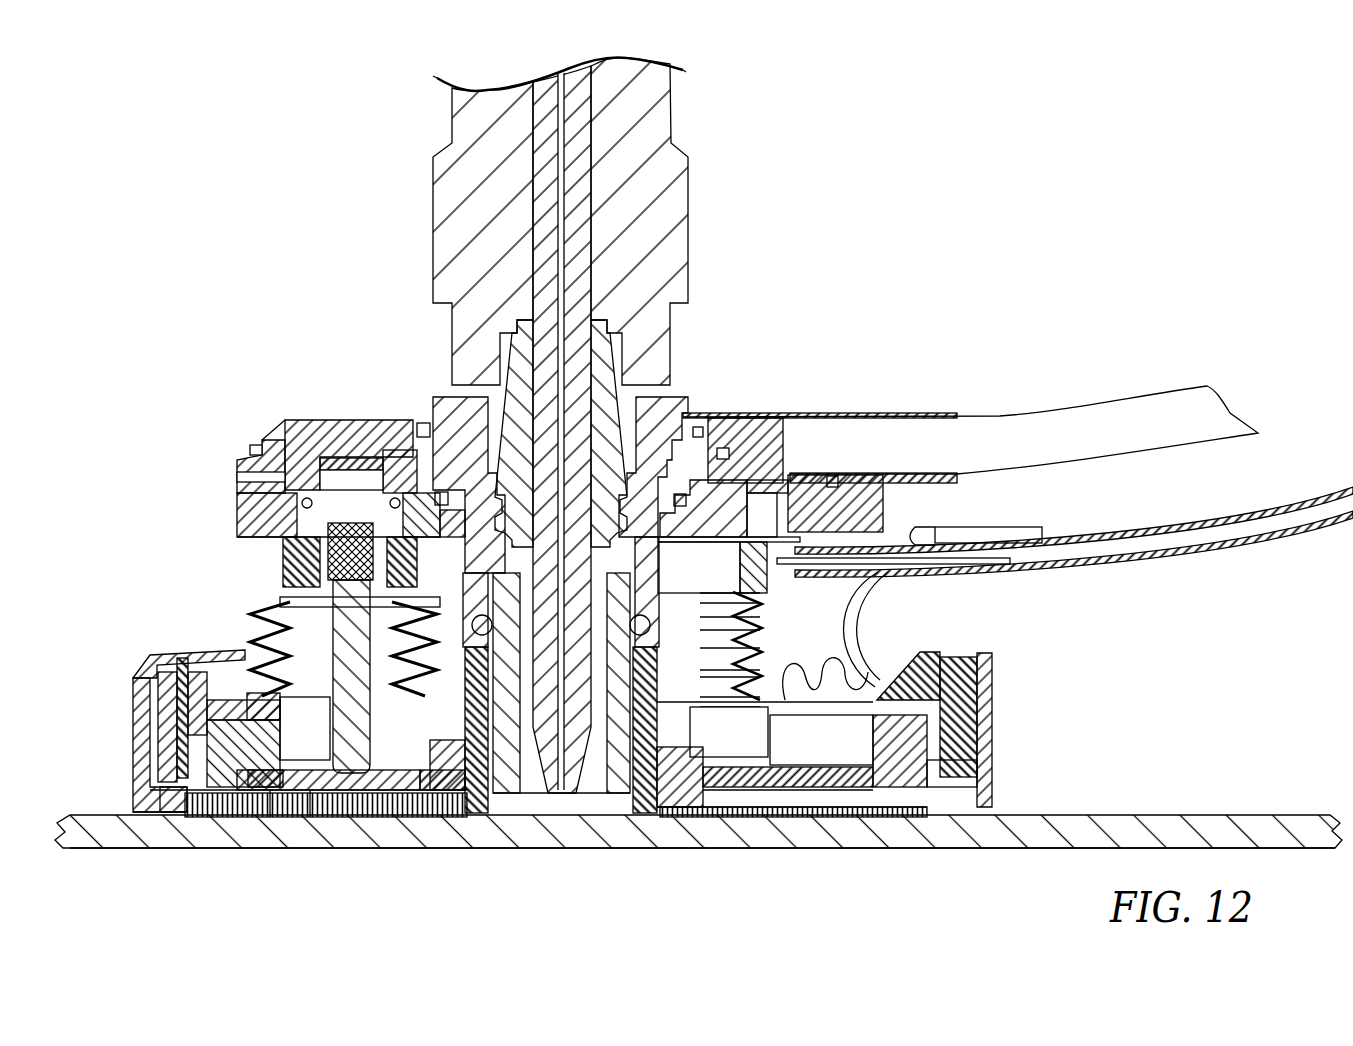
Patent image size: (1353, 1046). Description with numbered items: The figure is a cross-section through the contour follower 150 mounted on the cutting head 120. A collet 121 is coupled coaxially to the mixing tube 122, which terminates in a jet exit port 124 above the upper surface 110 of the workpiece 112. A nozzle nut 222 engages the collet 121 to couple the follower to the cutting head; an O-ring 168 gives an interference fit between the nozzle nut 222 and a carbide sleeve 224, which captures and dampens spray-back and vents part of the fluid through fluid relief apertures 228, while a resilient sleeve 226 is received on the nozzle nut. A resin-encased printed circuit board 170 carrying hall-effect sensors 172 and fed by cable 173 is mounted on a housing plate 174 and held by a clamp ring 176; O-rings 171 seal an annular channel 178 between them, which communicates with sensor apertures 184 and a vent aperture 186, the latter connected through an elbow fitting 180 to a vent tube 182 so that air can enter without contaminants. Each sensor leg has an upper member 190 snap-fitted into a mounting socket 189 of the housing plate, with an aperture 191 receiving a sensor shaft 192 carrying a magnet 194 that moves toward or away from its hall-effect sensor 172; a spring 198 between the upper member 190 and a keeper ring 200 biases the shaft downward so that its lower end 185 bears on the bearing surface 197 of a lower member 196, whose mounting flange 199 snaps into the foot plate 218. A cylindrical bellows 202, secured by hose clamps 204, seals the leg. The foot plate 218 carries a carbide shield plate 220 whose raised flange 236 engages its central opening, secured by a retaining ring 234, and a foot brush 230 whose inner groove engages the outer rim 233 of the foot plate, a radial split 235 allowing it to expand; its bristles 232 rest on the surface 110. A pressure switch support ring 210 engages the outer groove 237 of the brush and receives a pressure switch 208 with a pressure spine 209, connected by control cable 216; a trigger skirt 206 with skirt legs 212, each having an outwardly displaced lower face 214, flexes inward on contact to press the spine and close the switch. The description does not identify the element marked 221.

The upper surface 110 is at (1172, 806).
The workpiece 112 is at (1260, 840).
The cutting head 120 is at (483, 153).
The collet 121 is at (593, 368).
The mixing tube 122 is at (550, 208).
The jet exit port 124 is at (555, 800).
The contour follower 150 is at (926, 182).
The O-ring 168 is at (482, 790).
The printed circuit board 170 is at (318, 420).
The O-rings 171 is at (418, 423).
The hall-effect sensors 172 is at (339, 460).
The cable 173 is at (900, 418).
The housing plate 174 is at (237, 520).
The clamp ring 176 is at (275, 440).
The annular channel 178 is at (305, 470).
The elbow fitting 180 is at (870, 600).
The vent tube 182 is at (1012, 578).
The sensor apertures 184 is at (383, 500).
The lower end 185 is at (312, 797).
The vent aperture 186 is at (802, 470).
The mounting socket 189 is at (232, 508).
The upper member 190 is at (290, 550).
The aperture 191 is at (240, 560).
The sensor shaft 192 is at (330, 585).
The magnet 194 is at (240, 480).
The lower member 196 is at (240, 800).
The bearing surface 197 is at (310, 800).
The spring 198 is at (255, 640).
The mounting flange 199 is at (272, 792).
The keeper ring 200 is at (350, 775).
The cylindrical bellows 202 is at (300, 607).
The hose clamps 204 is at (432, 797).
The trigger skirt 206 is at (138, 690).
The pressure switch 208 is at (160, 735).
The pressure spine 209 is at (150, 727).
The pressure switch support ring 210 is at (190, 660).
The skirt legs 212 is at (133, 720).
The lower face 214 is at (120, 796).
The control cable 216 is at (885, 655).
The foot plate 218 is at (858, 795).
The shield plate 220 is at (820, 790).
The plate 221 is at (852, 805).
The nozzle nut 222 is at (655, 440).
The carbide sleeve 224 is at (510, 782).
The resilient sleeve 226 is at (641, 790).
The fluid relief apertures 228 is at (575, 770).
The foot brush 230 is at (197, 820).
The bristles 232 is at (207, 792).
The outer rim 233 is at (222, 800).
The retaining ring 234 is at (722, 780).
The radial split 235 is at (920, 705).
The raised flange 236 is at (662, 800).
The outer groove 237 is at (187, 755).